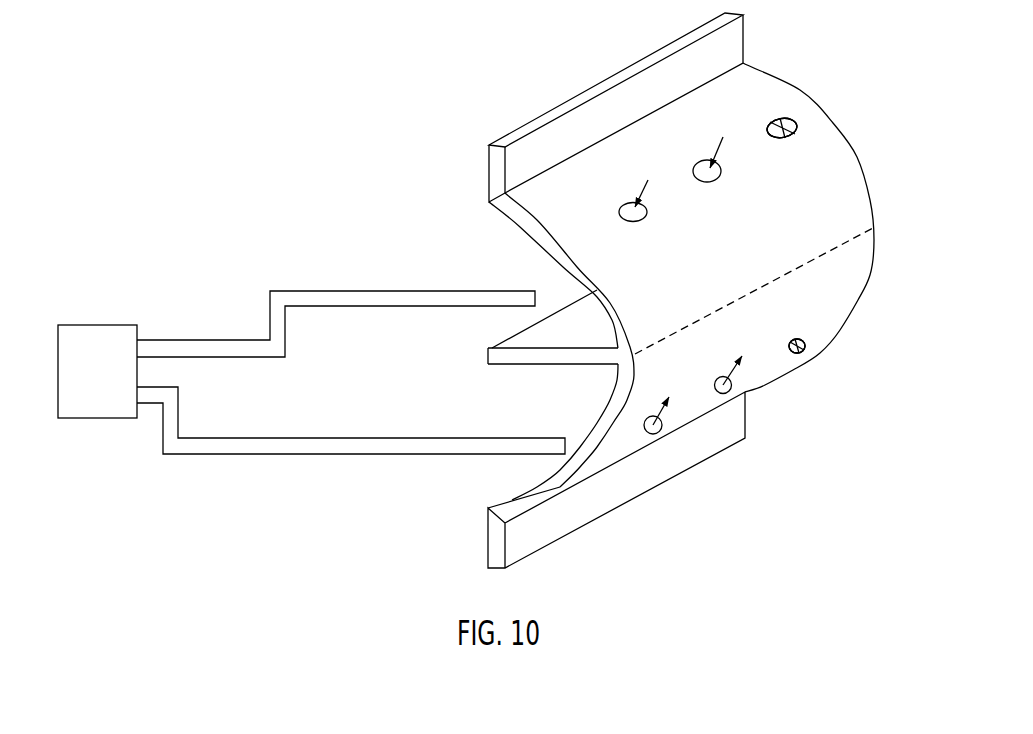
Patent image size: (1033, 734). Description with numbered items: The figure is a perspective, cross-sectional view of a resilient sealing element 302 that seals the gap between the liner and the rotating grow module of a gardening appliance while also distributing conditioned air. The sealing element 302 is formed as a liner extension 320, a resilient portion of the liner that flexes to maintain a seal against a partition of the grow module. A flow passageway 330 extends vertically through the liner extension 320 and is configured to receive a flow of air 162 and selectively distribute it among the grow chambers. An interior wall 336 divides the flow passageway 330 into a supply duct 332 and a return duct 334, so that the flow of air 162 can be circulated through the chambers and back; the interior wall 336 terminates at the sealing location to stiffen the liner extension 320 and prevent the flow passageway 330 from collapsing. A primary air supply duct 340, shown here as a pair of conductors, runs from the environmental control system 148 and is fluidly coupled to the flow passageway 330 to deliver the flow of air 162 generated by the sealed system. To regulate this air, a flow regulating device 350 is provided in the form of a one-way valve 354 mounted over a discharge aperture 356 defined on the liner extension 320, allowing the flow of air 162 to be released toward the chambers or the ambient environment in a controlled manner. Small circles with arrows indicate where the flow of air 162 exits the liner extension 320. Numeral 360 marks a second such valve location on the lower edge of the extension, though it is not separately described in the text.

The resilient sealing element 302 is at (456, 96).
The liner extension 320 is at (512, 219).
The flow passageway 330 is at (521, 395).
The supply duct 332 is at (537, 462).
The return duct 334 is at (522, 253).
The interior wall 336 is at (506, 354).
The primary air supply duct 340 is at (200, 340).
The environmental control system 148 is at (113, 386).
The flow of air 162 is at (724, 149).
The flow regulating device 350 is at (779, 112).
The one-way valve 354 is at (796, 134).
The discharge aperture 356 is at (800, 117).
The second sensor 360 is at (804, 356).